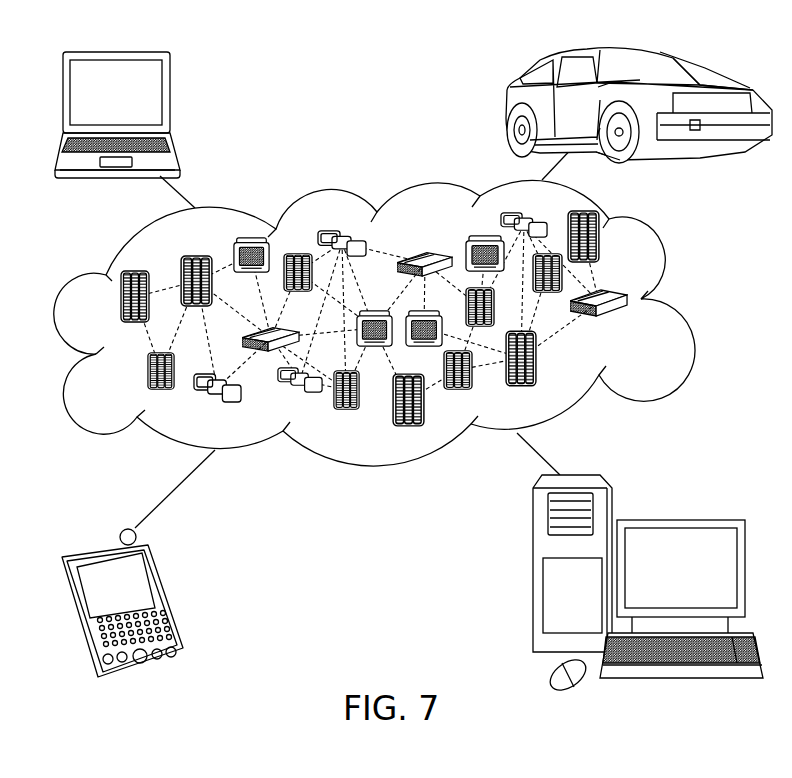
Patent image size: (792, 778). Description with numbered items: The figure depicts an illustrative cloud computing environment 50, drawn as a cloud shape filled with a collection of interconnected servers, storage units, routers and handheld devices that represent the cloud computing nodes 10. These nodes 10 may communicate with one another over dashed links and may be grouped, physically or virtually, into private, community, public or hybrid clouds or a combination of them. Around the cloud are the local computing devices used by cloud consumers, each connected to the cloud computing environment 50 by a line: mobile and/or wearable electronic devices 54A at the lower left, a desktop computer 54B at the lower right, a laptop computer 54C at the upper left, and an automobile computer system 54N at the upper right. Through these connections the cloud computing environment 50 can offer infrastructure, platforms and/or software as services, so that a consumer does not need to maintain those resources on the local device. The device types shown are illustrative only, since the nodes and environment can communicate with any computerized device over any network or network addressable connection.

The cloud computing node 10 is at (640, 325).
The cloud computing environment 50 is at (675, 300).
The mobile and/or wearable electronic devices 54A is at (168, 595).
The desktop computer 54B is at (677, 520).
The laptop computer 54C is at (172, 98).
The automobile computer system 54N is at (503, 108).